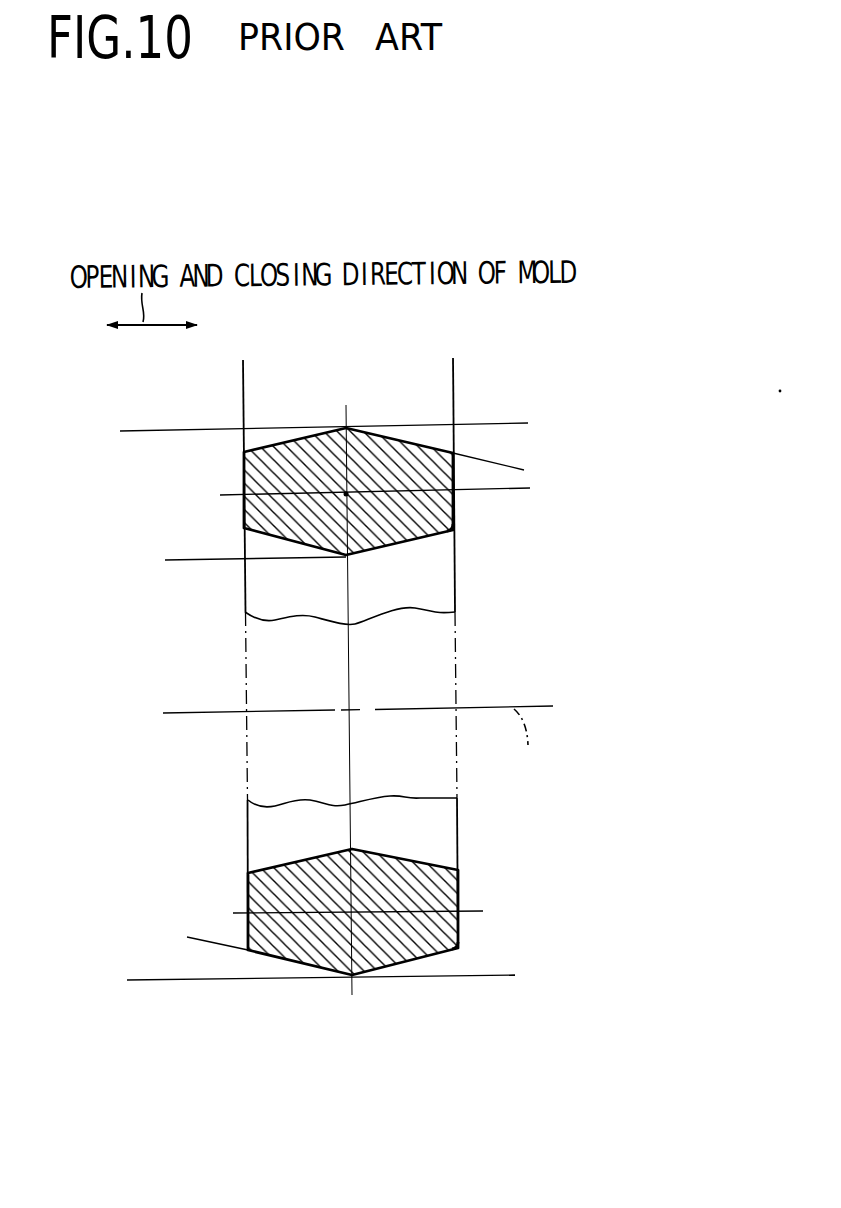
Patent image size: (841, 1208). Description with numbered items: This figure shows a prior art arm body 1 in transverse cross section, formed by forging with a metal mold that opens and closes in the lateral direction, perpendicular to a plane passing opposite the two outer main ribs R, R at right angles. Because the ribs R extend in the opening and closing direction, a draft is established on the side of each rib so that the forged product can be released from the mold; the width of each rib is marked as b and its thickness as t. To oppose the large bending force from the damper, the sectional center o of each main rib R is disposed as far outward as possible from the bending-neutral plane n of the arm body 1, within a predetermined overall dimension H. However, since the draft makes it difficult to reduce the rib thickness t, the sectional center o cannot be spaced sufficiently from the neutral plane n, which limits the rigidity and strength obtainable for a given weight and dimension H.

The arm body 1 is at (488, 929).
The block width b' b is at (453, 372).
The dimension H is at (142, 979).
The thickness t is at (176, 432).
The sectional center o is at (343, 491).
The main rib R is at (461, 509).
The bending-neutral plane n is at (525, 744).